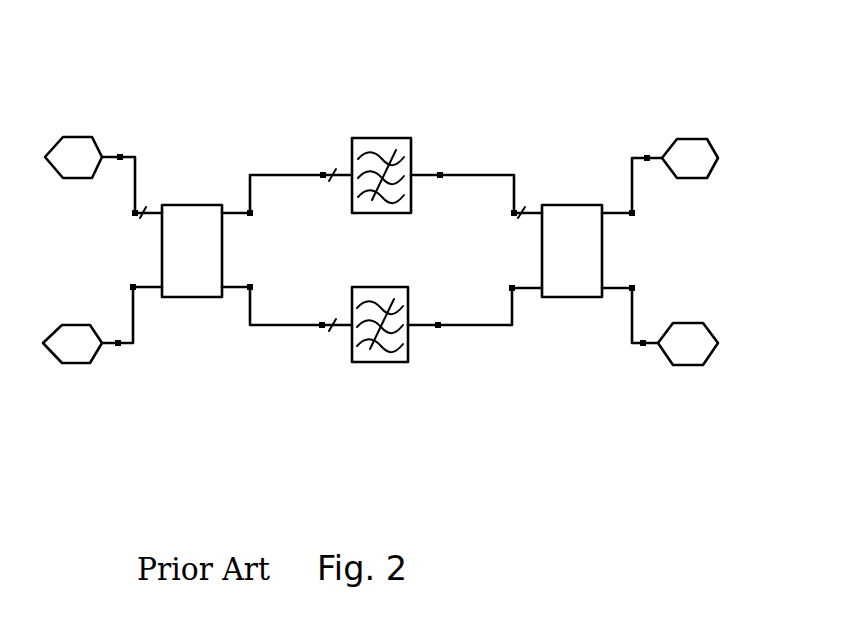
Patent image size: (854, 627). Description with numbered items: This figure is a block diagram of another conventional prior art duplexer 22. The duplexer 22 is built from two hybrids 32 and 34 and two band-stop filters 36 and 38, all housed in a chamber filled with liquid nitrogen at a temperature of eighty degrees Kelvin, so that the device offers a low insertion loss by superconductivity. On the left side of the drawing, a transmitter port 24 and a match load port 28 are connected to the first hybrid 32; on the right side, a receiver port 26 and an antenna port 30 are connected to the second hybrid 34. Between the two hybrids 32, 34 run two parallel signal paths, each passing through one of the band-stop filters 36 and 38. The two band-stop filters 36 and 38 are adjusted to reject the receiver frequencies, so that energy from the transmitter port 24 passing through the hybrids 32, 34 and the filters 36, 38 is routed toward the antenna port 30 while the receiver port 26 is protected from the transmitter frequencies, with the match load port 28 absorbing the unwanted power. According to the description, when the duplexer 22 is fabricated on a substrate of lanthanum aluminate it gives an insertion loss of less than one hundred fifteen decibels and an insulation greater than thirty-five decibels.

The duplexer 22 is at (541, 49).
The transmitter port 24 is at (81, 137).
The receiver port 26 is at (690, 139).
The match load port 28 is at (69, 325).
The antenna port 30 is at (690, 323).
The hybrid 32 is at (180, 205).
The hybrid 34 is at (553, 205).
The band-stop filter 36 is at (370, 138).
The band-stop filter 38 is at (408, 348).